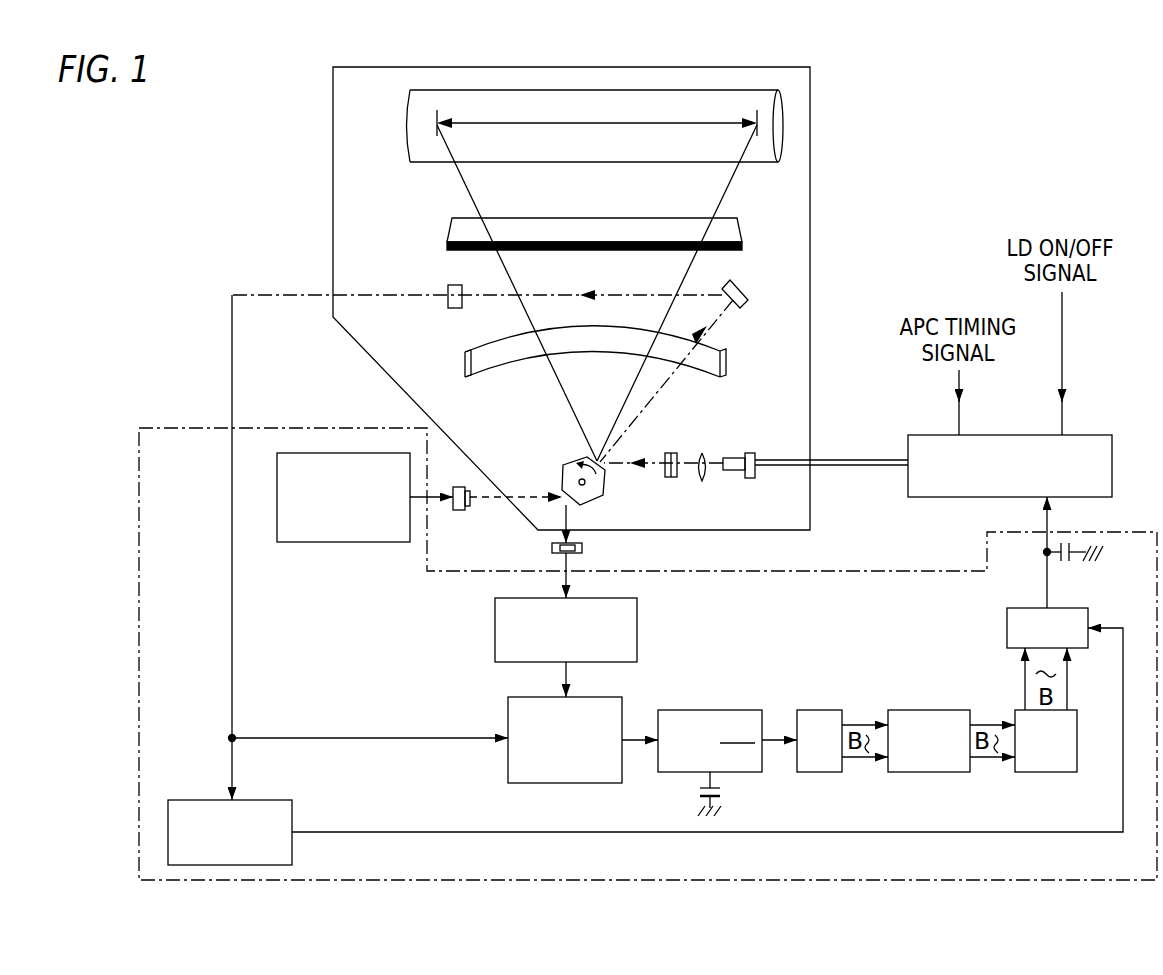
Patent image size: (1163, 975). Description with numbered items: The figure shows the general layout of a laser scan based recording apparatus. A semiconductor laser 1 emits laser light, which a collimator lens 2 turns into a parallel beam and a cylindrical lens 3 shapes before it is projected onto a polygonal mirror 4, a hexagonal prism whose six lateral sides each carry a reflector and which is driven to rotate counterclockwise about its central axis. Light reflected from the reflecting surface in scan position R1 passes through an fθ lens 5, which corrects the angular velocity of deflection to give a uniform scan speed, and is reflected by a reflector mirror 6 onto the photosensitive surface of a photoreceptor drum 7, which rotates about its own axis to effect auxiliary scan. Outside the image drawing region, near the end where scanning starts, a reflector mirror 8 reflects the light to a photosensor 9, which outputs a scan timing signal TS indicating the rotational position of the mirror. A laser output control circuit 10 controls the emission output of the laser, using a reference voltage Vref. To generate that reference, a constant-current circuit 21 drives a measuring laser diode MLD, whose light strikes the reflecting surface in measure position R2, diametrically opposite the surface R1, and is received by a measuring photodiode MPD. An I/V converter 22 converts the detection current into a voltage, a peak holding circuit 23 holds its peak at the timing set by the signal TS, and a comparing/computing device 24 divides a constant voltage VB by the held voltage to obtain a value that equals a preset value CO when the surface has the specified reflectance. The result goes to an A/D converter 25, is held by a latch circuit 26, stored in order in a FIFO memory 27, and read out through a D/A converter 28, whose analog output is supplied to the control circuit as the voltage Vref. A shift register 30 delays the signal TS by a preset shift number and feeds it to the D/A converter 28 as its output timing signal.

The semiconductor laser 1 is at (736, 471).
The collimator lens 2 is at (702, 481).
The cylindrical lens 3 is at (670, 478).
The polygonal mirror 4 is at (605, 492).
The fθ lens 5 is at (722, 362).
The reflector mirror 6 is at (742, 233).
The photoreceptor drum 7 is at (776, 165).
The reflector mirror 8 is at (748, 288).
The photosensor 9 is at (455, 308).
The laser output control circuit 10 is at (1112, 465).
The constant-current circuit 21 is at (397, 538).
The I/V converter 22 is at (637, 615).
The peak holding circuit 23 is at (608, 780).
The comparing/computing device 24 is at (707, 711).
The A/D converter 25 is at (818, 775).
The latch circuit 26 is at (927, 775).
The FIFO memory 27 is at (1044, 775).
The D/A converter 28 is at (1007, 628).
The shift register 30 is at (185, 800).
The reflecting surface in scan position R1 is at (600, 462).
The reflecting surface in measure position R2 is at (560, 488).
The measuring laser diode MLD is at (501, 515).
The measuring photodiode MPD is at (582, 548).
The scan timing signal TS is at (233, 620).
The preset value CO is at (771, 734).
The constant voltage VB is at (727, 794).
The reference voltage Vref is at (1074, 552).